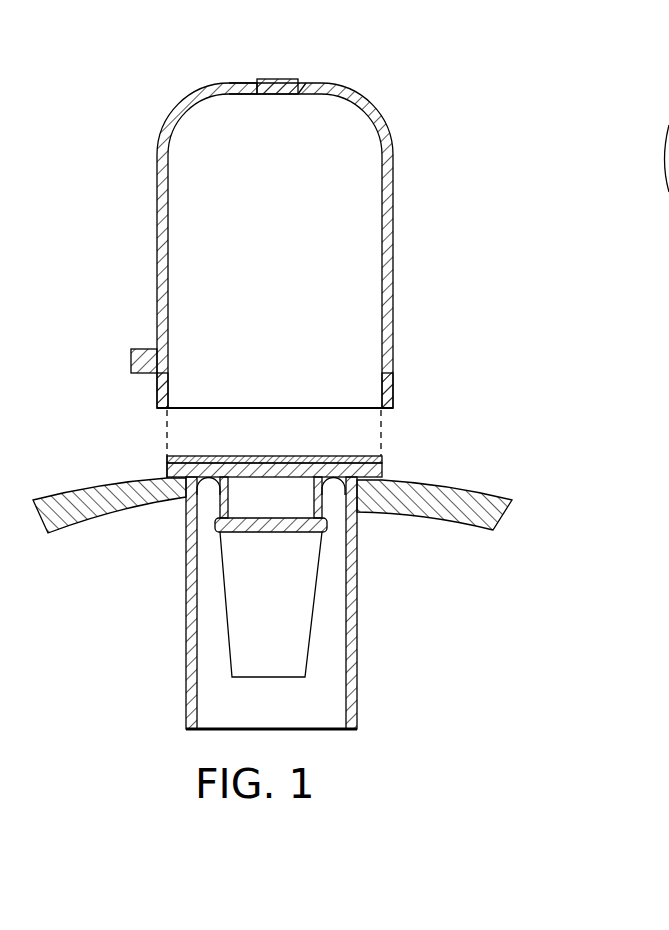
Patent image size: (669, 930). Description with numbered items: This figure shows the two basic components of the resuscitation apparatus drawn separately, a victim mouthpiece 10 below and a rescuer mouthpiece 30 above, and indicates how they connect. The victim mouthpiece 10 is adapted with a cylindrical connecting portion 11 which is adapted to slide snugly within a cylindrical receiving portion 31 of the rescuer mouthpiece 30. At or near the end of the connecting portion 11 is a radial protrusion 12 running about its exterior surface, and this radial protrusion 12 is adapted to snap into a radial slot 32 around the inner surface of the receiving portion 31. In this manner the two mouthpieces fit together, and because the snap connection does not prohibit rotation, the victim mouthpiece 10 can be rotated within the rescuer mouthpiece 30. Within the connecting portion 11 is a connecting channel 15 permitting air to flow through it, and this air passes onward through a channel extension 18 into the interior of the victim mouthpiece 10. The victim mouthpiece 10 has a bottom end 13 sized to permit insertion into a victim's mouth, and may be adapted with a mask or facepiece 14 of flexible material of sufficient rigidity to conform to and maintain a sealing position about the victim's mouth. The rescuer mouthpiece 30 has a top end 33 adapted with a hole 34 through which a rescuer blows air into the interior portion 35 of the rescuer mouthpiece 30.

The victim mouthpiece 10 is at (518, 448).
The connecting portion 11 is at (388, 457).
The radial protrusion 12 is at (167, 462).
The bottom end 13 is at (312, 730).
The mask or facepiece 14 is at (471, 488).
The connecting channel 15 is at (273, 457).
The channel extension 18 is at (289, 517).
The rescuer mouthpiece 30 is at (412, 100).
The receiving portion 31 is at (175, 367).
The radial slot 32 is at (383, 405).
The top end 33 is at (230, 83).
The hole 34 is at (299, 94).
The interior portion 35 is at (283, 289).